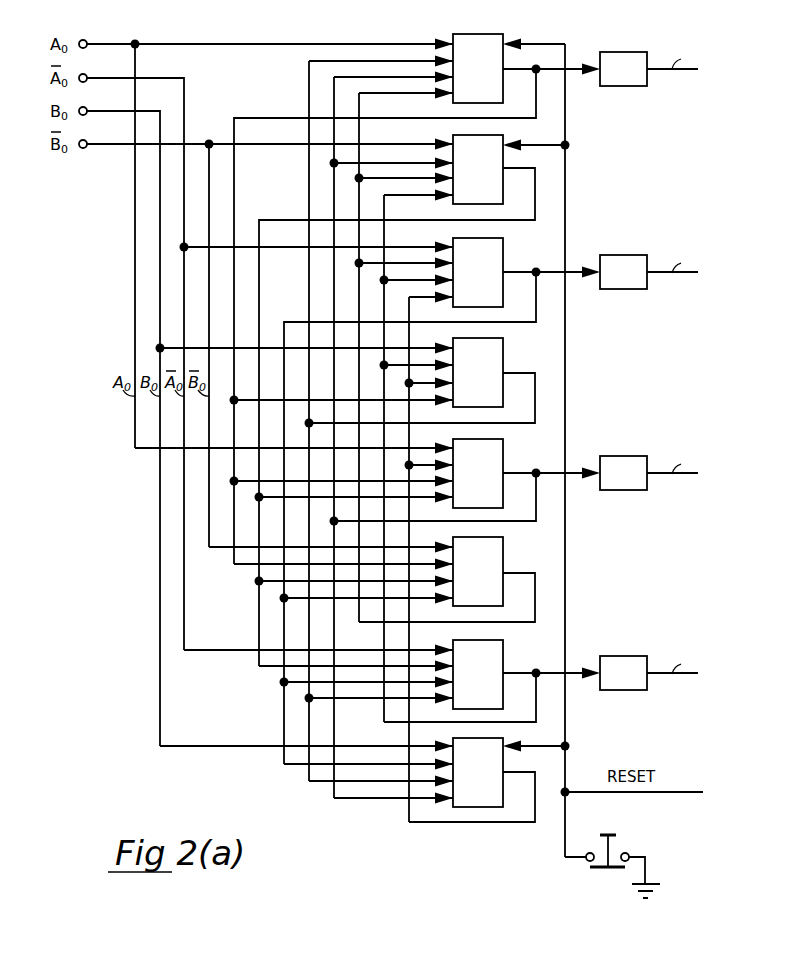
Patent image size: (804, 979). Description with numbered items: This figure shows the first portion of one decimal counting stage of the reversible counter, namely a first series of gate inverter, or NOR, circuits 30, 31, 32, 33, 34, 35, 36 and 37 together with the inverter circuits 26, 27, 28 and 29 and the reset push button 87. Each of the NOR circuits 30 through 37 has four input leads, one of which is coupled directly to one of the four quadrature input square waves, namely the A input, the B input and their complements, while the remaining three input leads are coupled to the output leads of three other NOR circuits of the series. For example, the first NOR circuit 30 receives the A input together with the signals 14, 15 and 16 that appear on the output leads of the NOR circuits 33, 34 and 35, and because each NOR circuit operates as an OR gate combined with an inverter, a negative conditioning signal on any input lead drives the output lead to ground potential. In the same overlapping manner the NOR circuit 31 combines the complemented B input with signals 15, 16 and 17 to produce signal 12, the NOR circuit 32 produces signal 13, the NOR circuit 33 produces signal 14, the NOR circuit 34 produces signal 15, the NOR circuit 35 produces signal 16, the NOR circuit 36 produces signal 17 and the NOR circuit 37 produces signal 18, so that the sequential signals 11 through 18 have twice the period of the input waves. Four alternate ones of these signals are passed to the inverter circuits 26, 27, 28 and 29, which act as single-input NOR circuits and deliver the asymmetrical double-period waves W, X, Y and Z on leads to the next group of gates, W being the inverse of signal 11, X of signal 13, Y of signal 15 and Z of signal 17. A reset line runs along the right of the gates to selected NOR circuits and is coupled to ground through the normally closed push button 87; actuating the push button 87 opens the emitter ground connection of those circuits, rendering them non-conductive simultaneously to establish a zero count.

The sequential signal 11 is at (536, 72).
The sequential signal 12 is at (530, 172).
The sequential signal 13 is at (536, 270).
The sequential signal 14 is at (530, 374).
The sequential signal 15 is at (536, 470).
The sequential signal 16 is at (530, 574).
The sequential signal 17 is at (536, 672).
The sequential signal 18 is at (525, 758).
The inverter circuit 26 is at (612, 52).
The inverter circuit 27 is at (615, 255).
The inverter circuit 28 is at (615, 456).
The inverter circuit 29 is at (615, 656).
The NOR circuit 30 is at (504, 25).
The NOR circuit 31 is at (504, 125).
The NOR circuit 32 is at (504, 227).
The NOR circuit 33 is at (504, 327).
The NOR circuit 34 is at (504, 428).
The NOR circuit 35 is at (504, 527).
The NOR circuit 36 is at (504, 628).
The NOR circuit 37 is at (504, 777).
The push button 87 is at (586, 866).